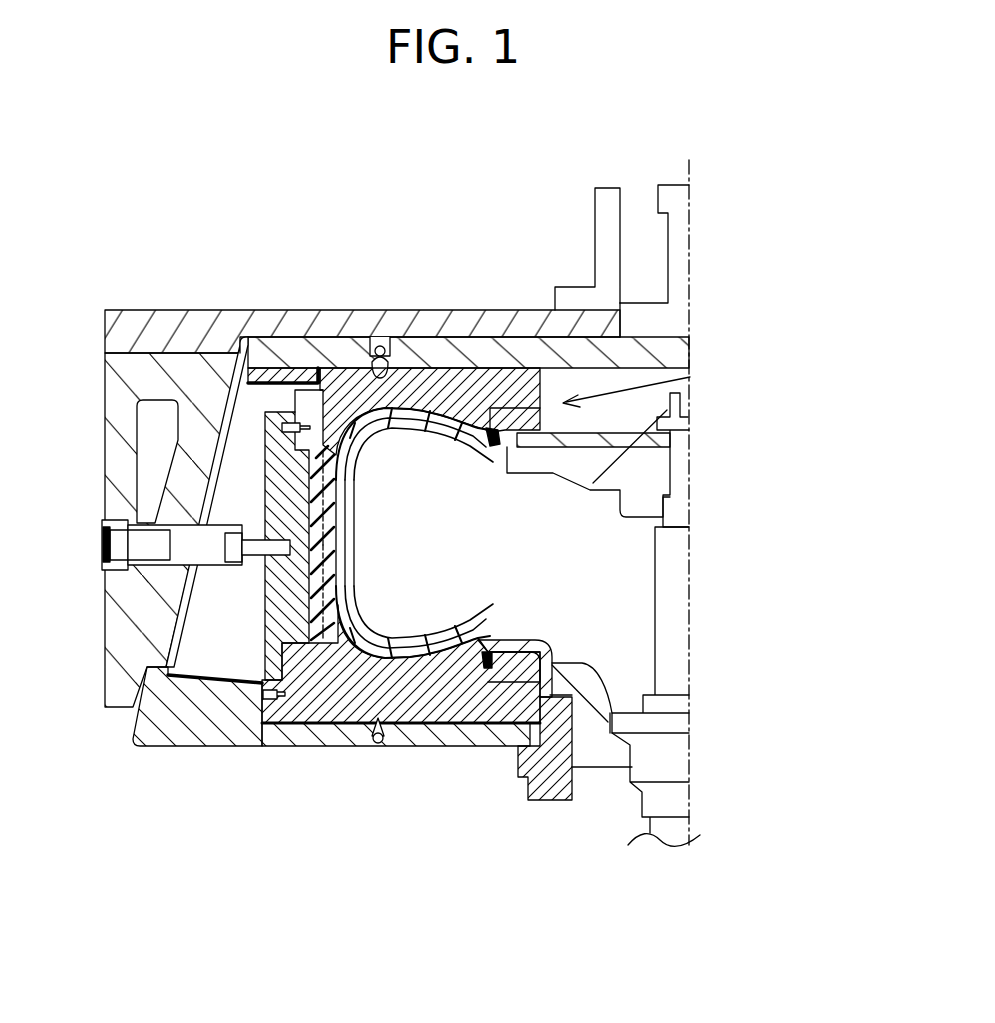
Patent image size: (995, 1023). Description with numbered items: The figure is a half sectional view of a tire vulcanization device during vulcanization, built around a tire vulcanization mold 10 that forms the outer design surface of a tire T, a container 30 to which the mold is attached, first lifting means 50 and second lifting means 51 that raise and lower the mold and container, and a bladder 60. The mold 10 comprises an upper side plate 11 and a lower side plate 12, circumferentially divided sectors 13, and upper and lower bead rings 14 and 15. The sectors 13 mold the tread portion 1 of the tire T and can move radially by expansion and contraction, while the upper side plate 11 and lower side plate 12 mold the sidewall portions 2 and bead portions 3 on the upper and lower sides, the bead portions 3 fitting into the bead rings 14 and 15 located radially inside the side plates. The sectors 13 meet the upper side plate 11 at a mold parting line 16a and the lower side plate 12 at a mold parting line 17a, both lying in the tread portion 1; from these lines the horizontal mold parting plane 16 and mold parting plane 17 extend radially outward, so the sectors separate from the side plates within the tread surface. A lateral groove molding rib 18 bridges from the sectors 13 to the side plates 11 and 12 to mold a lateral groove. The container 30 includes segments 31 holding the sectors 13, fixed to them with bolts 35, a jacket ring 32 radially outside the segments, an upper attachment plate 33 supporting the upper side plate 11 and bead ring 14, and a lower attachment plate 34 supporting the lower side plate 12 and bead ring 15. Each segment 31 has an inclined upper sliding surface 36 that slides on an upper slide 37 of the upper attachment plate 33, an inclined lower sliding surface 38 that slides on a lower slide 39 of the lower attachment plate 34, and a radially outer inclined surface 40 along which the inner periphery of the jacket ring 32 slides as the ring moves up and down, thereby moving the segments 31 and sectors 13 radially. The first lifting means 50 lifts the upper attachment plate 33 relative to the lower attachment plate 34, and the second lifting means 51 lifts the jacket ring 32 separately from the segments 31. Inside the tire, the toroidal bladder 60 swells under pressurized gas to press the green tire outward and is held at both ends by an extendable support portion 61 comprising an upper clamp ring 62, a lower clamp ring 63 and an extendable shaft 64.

The tread portion 1 is at (336, 560).
The sidewall portion 2 is at (405, 414).
The bead portion 3 is at (492, 440).
The tire vulcanization mold 10 is at (690, 375).
The upper side plate 11 is at (455, 356).
The lower side plate 12 is at (440, 735).
The sector 13 is at (273, 602).
The upper bead ring 14 is at (520, 400).
The lower bead ring 15 is at (540, 645).
The mold parting plane 16 is at (300, 462).
The mold parting line 16a is at (326, 468).
The mold parting plane 17 is at (308, 672).
The mold parting line 17a is at (330, 642).
The lateral groove molding rib 18 is at (358, 600).
The container 30 is at (122, 292).
The segment 31 is at (178, 632).
The jacket ring 32 is at (125, 402).
The upper attachment plate 33 is at (415, 325).
The lower attachment plate 34 is at (545, 750).
The bolt 35 is at (130, 545).
The upper sliding surface 36 is at (250, 343).
The upper slide 37 is at (305, 376).
The lower sliding surface 38 is at (235, 690).
The lower slide 39 is at (195, 660).
The inclined surface 40 is at (182, 574).
The first lifting means 50 is at (676, 262).
The second lifting means 51 is at (600, 248).
The bladder 60 is at (545, 470).
The extendable support portion 61 is at (672, 766).
The upper clamp ring 62 is at (675, 474).
The lower clamp ring 63 is at (603, 748).
The extendable shaft 64 is at (672, 592).
The tire T is at (452, 417).